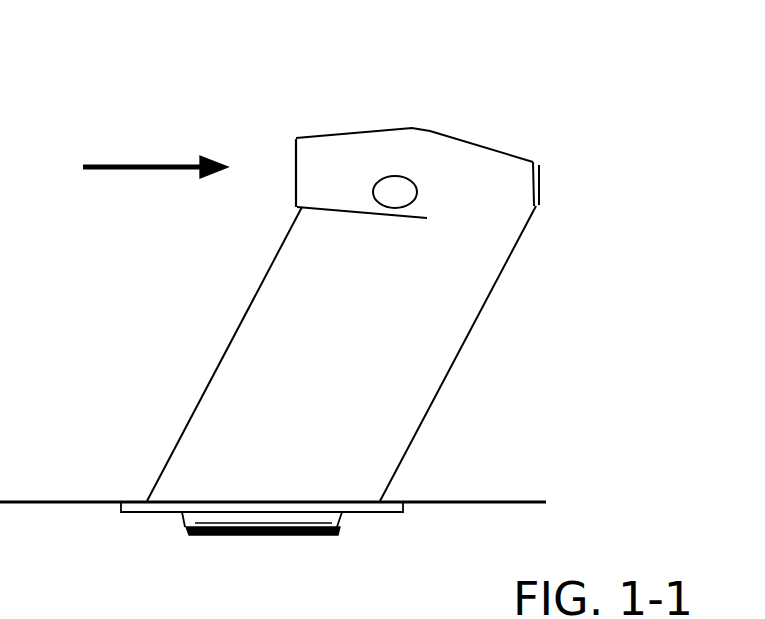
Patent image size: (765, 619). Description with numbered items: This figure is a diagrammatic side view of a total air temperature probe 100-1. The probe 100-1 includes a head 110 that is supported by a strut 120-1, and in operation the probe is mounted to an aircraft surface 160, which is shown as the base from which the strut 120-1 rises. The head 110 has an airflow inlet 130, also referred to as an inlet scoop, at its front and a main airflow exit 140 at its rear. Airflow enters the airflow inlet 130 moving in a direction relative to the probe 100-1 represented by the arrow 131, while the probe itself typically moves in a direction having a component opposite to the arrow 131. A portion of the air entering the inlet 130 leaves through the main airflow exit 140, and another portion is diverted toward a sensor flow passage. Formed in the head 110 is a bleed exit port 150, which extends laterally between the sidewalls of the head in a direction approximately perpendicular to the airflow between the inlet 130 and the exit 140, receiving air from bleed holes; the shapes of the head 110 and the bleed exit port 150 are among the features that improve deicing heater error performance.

The total air temperature probe 100-1 is at (552, 64).
The head 110 is at (348, 150).
The strut 120-1 is at (420, 359).
The airflow inlet 130 is at (293, 152).
The arrow 131 is at (160, 170).
The main airflow exit 140 is at (537, 182).
The bleed exit port 150 is at (402, 184).
The aircraft surface 160 is at (507, 500).